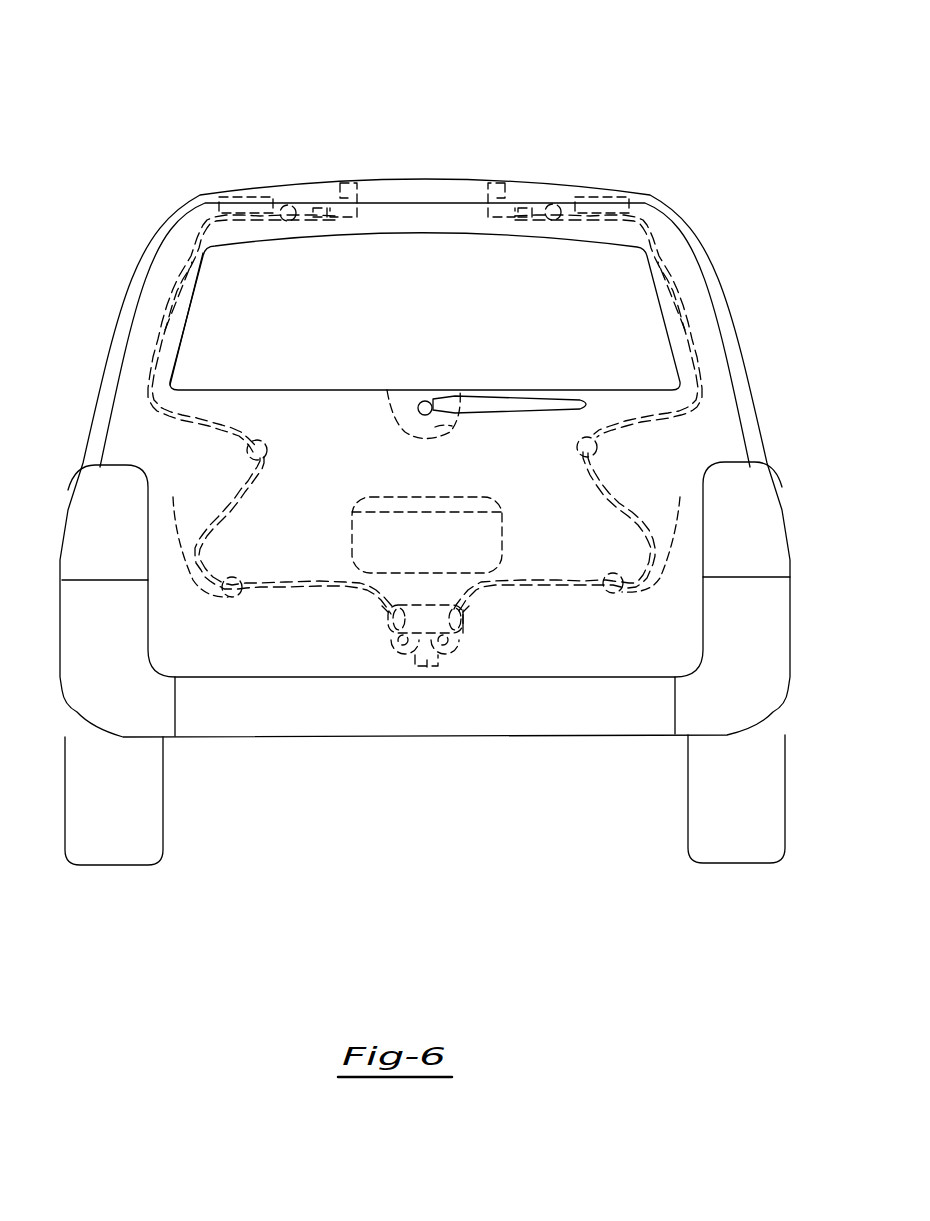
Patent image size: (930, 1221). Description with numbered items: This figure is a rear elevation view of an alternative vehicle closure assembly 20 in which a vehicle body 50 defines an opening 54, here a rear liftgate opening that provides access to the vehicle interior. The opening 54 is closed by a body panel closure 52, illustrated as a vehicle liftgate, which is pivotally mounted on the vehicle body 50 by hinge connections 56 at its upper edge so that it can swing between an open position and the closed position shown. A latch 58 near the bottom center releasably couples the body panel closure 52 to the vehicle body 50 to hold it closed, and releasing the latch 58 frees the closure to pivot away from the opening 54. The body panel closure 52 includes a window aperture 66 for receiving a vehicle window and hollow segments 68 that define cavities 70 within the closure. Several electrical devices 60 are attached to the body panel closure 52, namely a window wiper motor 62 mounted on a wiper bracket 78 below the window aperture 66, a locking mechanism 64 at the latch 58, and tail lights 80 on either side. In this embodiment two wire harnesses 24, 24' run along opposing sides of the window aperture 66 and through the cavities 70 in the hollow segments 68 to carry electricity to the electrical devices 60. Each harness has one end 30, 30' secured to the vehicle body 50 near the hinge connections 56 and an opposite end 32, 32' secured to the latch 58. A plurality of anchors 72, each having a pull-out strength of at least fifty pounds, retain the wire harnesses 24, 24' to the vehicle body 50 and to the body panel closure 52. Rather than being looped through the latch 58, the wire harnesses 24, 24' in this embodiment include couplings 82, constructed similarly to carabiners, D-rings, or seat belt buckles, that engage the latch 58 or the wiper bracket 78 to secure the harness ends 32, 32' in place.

The vehicle closure assembly 20 is at (116, 114).
The wire harness 24 is at (554, 532).
The wire harness 24' is at (295, 535).
The end 30 is at (504, 152).
The end 30' is at (345, 153).
The end 32 is at (509, 625).
The end 32' is at (345, 626).
The vehicle body 50 is at (112, 378).
The body panel closure 52 is at (240, 652).
The opening 54 is at (577, 677).
The hinge connections 56 is at (235, 195).
The latch 58 is at (462, 623).
The electrical devices 60 is at (420, 421).
The window wiper motor 62 is at (427, 397).
The locking mechanism 64 is at (427, 668).
The window aperture 66 is at (401, 312).
The hollow segments 68 is at (192, 287).
The cavities 70 is at (178, 276).
The anchors 72 is at (288, 203).
The wiper bracket 78 is at (437, 427).
The tail lights 80 is at (107, 494).
The couplings 82 is at (443, 612).